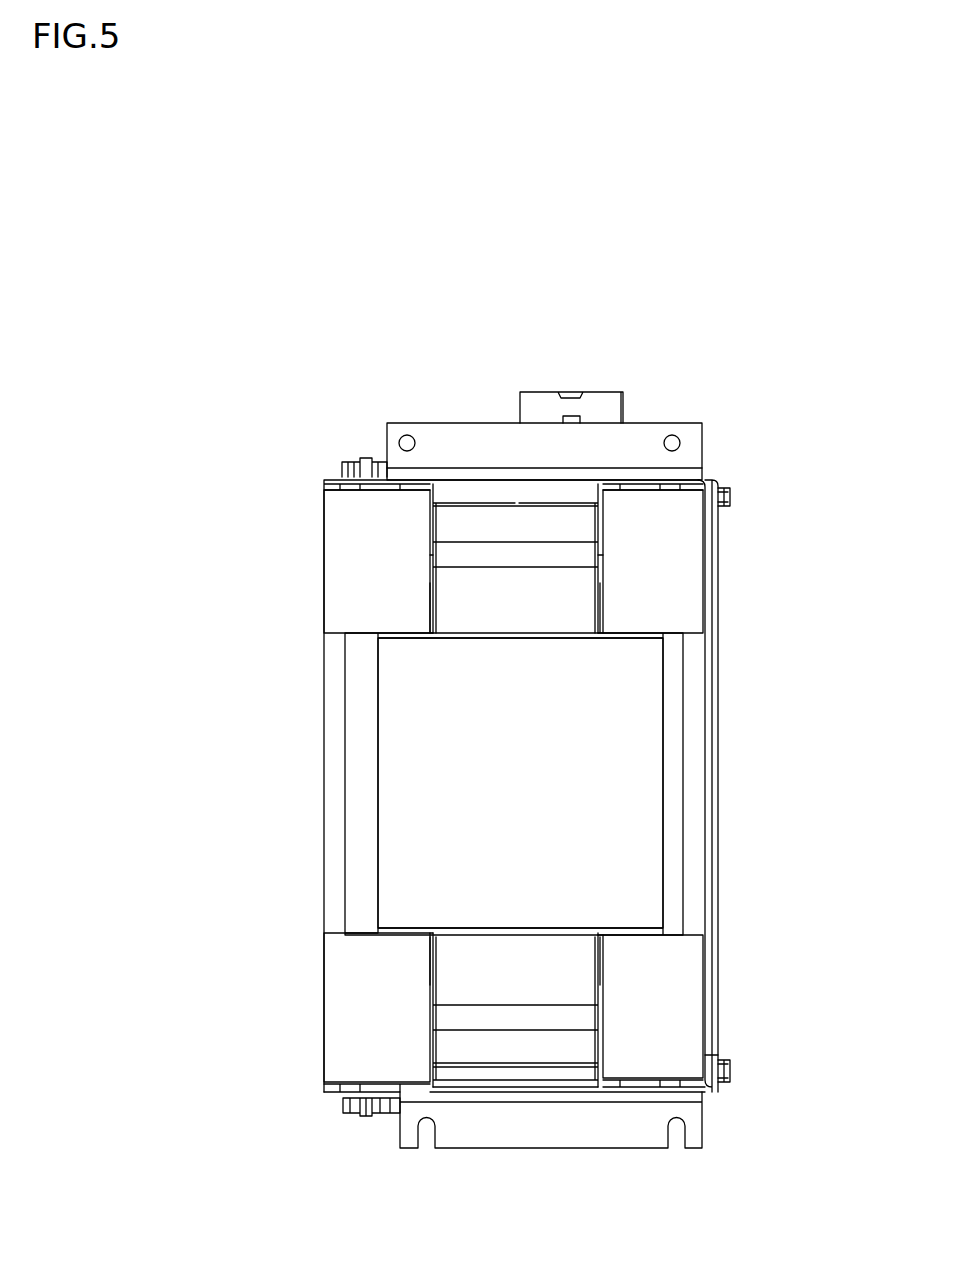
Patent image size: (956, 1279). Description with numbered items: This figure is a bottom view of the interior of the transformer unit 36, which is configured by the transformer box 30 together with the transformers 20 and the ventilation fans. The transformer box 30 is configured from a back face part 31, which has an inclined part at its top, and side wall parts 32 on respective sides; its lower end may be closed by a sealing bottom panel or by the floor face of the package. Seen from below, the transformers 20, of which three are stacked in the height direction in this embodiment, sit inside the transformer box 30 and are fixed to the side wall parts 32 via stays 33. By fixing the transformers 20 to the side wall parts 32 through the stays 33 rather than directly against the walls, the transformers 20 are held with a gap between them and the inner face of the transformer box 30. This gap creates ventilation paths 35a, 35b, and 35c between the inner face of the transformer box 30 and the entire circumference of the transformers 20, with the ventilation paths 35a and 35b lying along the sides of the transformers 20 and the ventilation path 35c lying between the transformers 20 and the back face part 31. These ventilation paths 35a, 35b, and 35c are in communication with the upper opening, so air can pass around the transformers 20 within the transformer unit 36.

The transformers 20 is at (447, 833).
The transformer box 30 is at (735, 1032).
The back face part 31 is at (720, 868).
The side wall parts 32 is at (356, 460).
The stays 33 is at (430, 555).
The ventilation path 35a is at (347, 552).
The ventilation path 35b is at (336, 782).
The ventilation path 35c is at (522, 603).
The transformer unit 36 is at (683, 338).